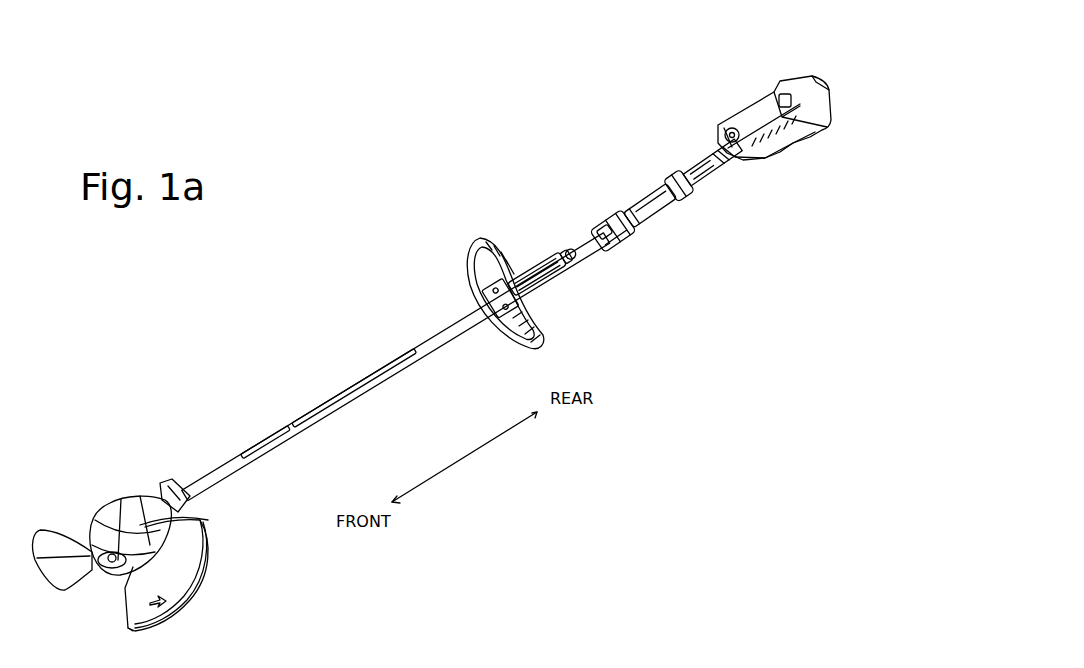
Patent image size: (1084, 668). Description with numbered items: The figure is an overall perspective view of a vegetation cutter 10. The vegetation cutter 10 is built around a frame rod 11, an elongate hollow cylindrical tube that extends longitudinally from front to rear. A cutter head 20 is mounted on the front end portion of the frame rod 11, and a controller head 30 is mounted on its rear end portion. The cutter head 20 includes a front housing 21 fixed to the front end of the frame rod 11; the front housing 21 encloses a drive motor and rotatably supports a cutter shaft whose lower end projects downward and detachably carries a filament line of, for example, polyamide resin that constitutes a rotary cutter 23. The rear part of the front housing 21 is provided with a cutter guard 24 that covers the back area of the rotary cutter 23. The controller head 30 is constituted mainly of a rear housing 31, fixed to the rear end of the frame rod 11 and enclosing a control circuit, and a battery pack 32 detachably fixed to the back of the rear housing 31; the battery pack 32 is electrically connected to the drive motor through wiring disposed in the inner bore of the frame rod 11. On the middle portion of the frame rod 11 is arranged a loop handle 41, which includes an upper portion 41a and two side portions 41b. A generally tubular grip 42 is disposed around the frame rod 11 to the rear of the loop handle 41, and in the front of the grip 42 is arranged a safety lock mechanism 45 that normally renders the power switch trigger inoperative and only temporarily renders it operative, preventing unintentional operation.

The vegetation cutter 10 is at (358, 225).
The frame rod 11 is at (423, 343).
The cutter head 20 is at (102, 488).
The front housing 21 is at (100, 520).
The rotary cutter 23 is at (55, 567).
The cutter guard 24 is at (173, 555).
The controller head 30 is at (728, 98).
The rear housing 31 is at (768, 155).
The battery pack 32 is at (790, 83).
The loop handle 41 is at (472, 240).
The upper portion 41a is at (476, 288).
The side portions 41b is at (497, 244).
The grip 42 is at (640, 214).
The safety lock mechanism 45 is at (605, 217).